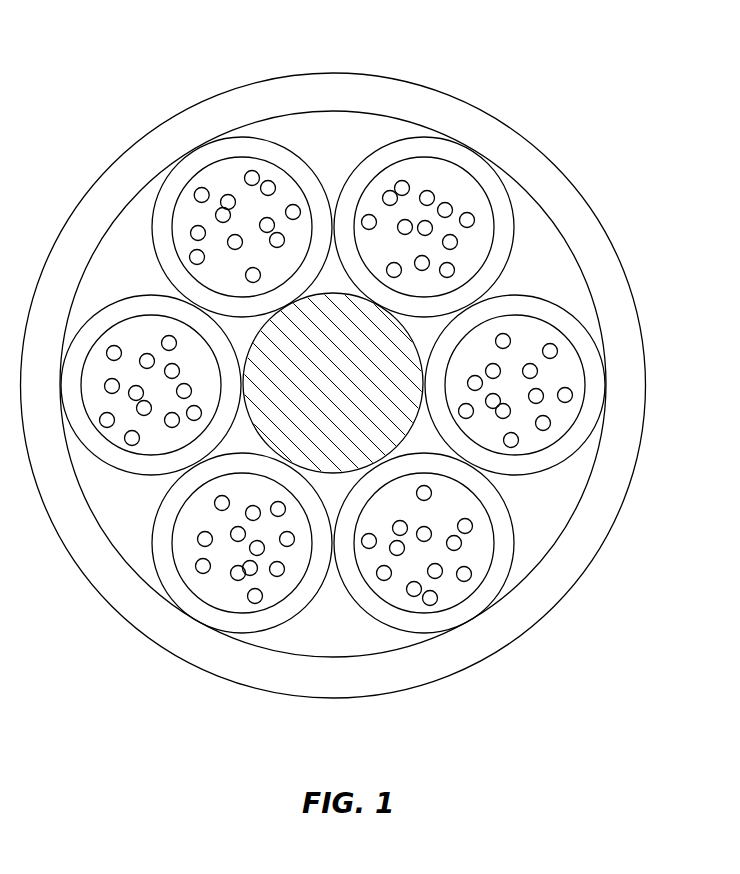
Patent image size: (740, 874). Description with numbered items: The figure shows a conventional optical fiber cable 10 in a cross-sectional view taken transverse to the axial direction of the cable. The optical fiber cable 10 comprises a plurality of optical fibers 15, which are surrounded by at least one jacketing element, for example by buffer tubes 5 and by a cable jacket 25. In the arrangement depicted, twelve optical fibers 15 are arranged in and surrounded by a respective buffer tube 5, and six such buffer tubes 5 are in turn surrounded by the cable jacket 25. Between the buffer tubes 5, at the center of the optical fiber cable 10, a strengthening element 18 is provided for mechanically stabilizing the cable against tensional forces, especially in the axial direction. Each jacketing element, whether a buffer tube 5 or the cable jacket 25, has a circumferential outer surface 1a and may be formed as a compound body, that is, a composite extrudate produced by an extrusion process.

The optical fiber cable 10 is at (113, 78).
The optical fibers 15 is at (293, 210).
The strengthening element 18 is at (333, 358).
The buffer tube 5 is at (490, 262).
The cable jacket 25 is at (608, 290).
The outer surface 1a is at (523, 477).